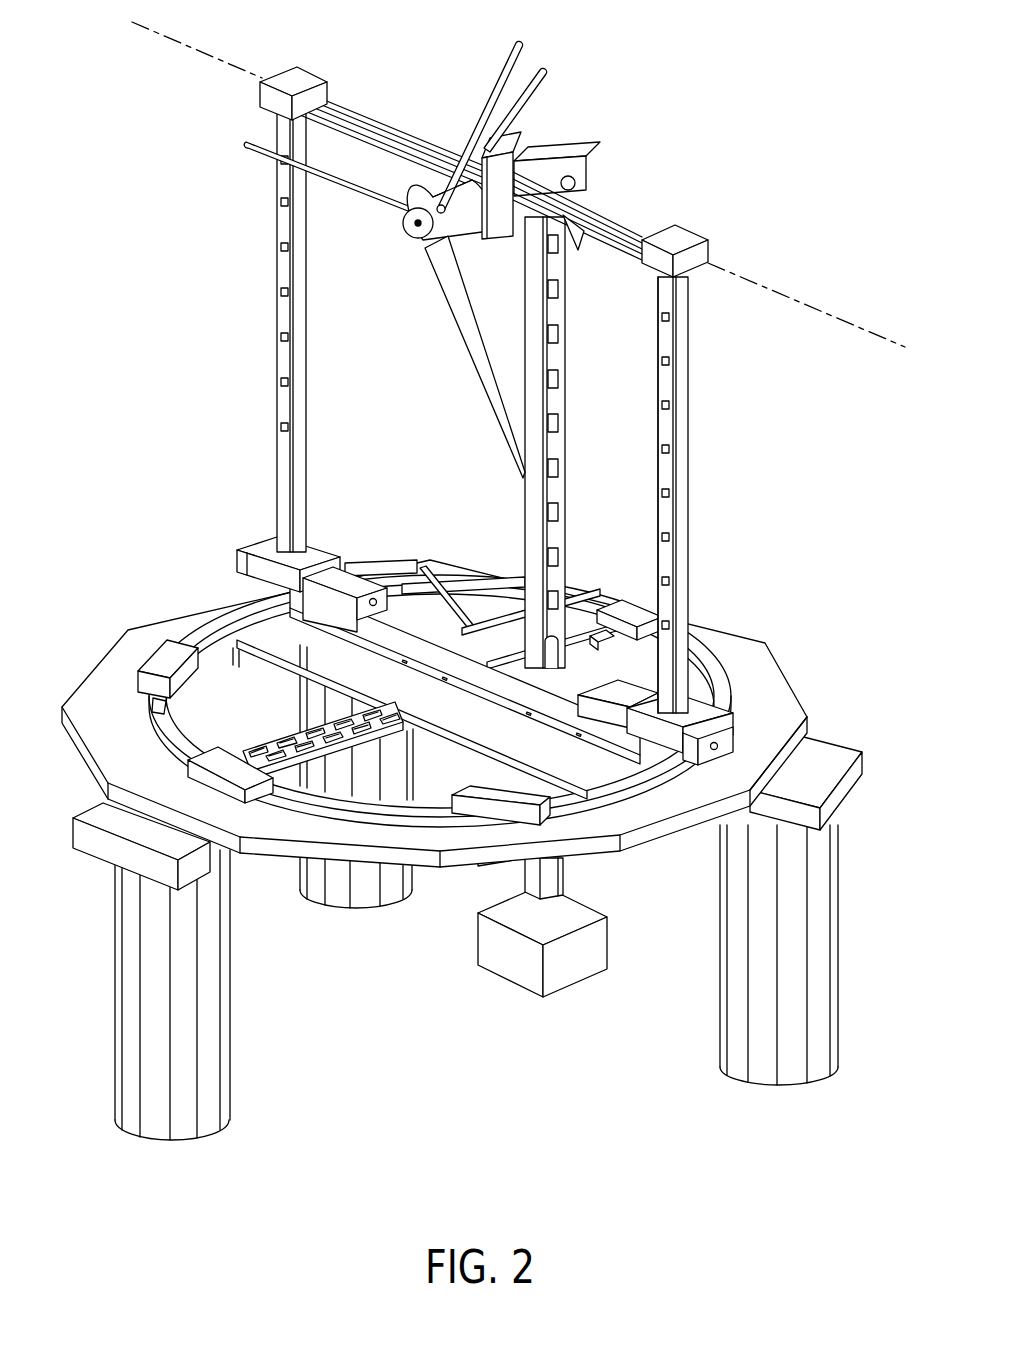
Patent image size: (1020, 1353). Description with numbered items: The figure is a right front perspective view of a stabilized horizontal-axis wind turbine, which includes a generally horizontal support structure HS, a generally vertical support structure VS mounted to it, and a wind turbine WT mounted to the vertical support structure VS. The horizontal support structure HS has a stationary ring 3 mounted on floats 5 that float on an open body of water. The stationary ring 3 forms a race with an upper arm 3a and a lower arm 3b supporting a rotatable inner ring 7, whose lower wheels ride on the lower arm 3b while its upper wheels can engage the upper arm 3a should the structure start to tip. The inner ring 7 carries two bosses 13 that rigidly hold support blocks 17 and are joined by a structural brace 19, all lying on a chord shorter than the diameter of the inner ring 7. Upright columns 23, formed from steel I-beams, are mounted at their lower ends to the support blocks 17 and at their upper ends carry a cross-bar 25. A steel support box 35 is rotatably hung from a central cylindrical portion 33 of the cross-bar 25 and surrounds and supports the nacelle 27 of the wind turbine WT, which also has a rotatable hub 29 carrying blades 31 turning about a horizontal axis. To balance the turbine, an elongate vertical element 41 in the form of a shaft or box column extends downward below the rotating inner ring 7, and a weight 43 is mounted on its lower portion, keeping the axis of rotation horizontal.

The stationary ring 3 is at (112, 735).
The upper arm 3a is at (153, 660).
The lower arm 3b is at (600, 637).
The floats 5 is at (123, 1047).
The rotatable inner ring 7 is at (273, 647).
The bosses 13 is at (347, 583).
The support blocks 17 is at (315, 553).
The structural brace 19 is at (416, 632).
The upright columns 23 is at (283, 267).
The cross-bar 25 is at (618, 223).
The nacelle 27 is at (452, 224).
The rotatable hub 29 is at (420, 240).
The blades 31 is at (493, 88).
The central cylindrical portion 33 is at (512, 143).
The support box 35 is at (497, 143).
The elongate vertical element 41 is at (558, 397).
The weight 43 is at (518, 965).
The wind turbine WT is at (385, 258).
The generally vertical support structure VS is at (703, 432).
The generally horizontal support structure HS is at (800, 656).